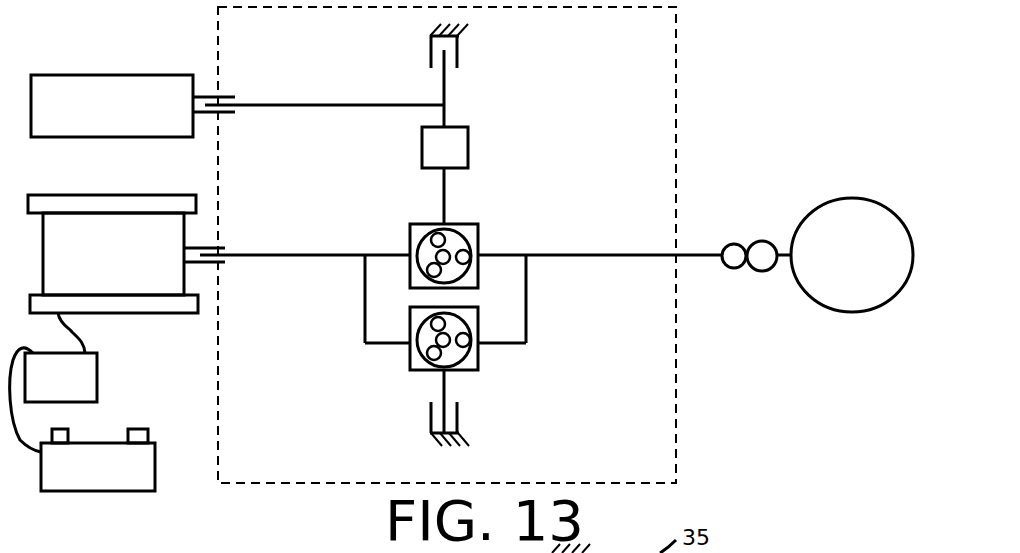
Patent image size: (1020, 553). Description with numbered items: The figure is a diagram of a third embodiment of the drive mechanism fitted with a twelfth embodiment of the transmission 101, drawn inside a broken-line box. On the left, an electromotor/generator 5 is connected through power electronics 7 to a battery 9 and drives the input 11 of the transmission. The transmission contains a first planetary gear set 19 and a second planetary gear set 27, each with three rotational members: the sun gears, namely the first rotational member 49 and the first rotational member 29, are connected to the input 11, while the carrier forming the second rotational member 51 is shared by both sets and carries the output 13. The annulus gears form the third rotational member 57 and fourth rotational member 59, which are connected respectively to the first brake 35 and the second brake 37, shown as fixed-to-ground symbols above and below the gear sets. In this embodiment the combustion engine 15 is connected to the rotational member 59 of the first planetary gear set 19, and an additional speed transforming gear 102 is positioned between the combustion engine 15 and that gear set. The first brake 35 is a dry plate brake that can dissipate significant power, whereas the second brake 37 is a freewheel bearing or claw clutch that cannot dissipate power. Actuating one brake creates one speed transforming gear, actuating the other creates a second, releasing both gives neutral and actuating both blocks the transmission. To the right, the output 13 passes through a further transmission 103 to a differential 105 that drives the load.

The electromotor/generator 5 is at (148, 318).
The power electronics 7 is at (77, 386).
The battery 9 is at (130, 473).
The input 11 is at (237, 255).
The output 13 is at (654, 254).
The combustion engine 15 is at (104, 75).
The first planetary gear set 19 is at (466, 229).
The second planetary gear set 27 is at (449, 373).
The first rotational member 29 is at (408, 347).
The first brake 35 is at (462, 52).
The second brake 37 is at (430, 417).
The first rotational member 49 is at (363, 253).
The second rotational member 51 is at (529, 253).
The third rotational member 57 is at (440, 372).
The fourth rotational member 59 is at (440, 226).
The transmission 101 is at (682, 400).
The speed transforming gear 102 is at (420, 146).
The further transmission 103 is at (743, 234).
The differential 105 is at (855, 190).